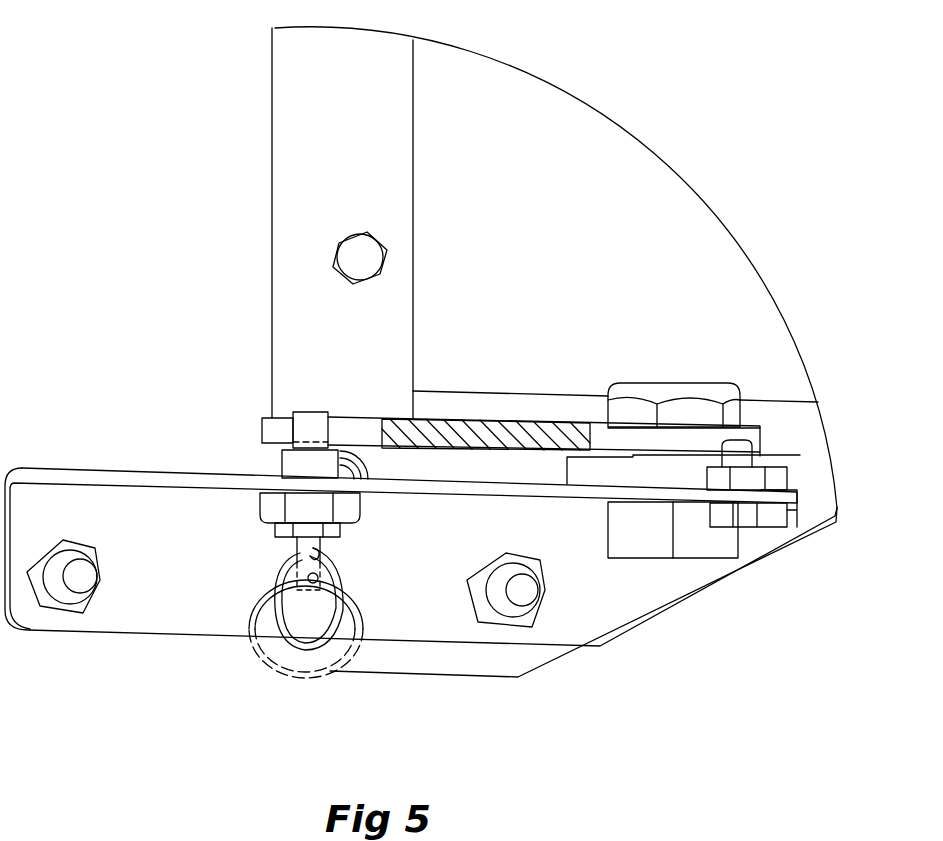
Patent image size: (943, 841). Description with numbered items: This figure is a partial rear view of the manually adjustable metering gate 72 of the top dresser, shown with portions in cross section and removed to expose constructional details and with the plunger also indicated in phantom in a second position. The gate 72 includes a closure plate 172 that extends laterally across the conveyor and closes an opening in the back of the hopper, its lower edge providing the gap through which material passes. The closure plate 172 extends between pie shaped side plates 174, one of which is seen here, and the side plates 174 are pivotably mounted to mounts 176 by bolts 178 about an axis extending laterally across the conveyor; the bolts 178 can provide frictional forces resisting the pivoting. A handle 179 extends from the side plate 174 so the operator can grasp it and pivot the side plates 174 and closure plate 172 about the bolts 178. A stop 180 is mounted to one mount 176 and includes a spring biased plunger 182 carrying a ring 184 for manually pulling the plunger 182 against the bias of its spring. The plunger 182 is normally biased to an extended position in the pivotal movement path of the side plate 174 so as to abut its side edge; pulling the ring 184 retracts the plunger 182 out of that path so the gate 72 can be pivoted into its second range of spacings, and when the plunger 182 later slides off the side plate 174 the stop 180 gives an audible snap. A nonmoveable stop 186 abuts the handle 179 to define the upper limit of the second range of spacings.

The gate 72 is at (97, 143).
The closure plate 172 is at (272, 218).
The side plates 174 is at (262, 430).
The mounts 176 is at (93, 628).
The bolts 178 is at (682, 558).
The handle 179 is at (488, 432).
The stop 180 is at (258, 509).
The plunger 182 is at (312, 420).
The ring 184 is at (282, 640).
The nonmoveable stop 186 is at (743, 527).